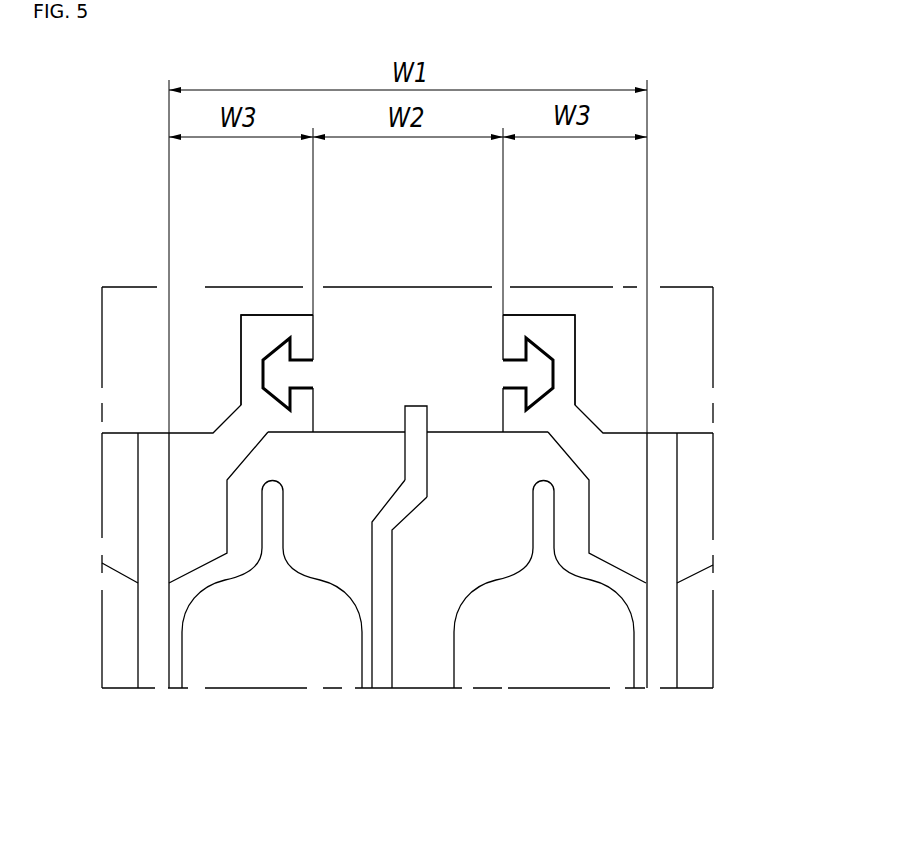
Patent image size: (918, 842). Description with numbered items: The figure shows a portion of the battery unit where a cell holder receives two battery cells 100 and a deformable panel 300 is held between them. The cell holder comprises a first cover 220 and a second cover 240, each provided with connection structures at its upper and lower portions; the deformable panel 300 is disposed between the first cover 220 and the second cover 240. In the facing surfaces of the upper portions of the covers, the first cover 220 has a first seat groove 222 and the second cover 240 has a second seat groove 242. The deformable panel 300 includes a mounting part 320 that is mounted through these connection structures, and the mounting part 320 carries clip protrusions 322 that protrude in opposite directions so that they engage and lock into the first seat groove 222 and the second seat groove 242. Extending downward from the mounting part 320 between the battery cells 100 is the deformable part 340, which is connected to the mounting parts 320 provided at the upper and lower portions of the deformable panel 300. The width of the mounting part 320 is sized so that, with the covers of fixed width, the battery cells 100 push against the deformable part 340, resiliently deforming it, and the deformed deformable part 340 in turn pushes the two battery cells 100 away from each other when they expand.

The battery cells 100 is at (268, 690).
The first cover 220 is at (203, 460).
The first seat grooves 222 is at (282, 338).
The second cover 240 is at (619, 450).
The second seat grooves 242 is at (535, 340).
The deformable panel 300 is at (437, 445).
The mounting parts 320 is at (385, 353).
The clip protrusions 322 is at (293, 377).
The deformable part 340 is at (386, 655).